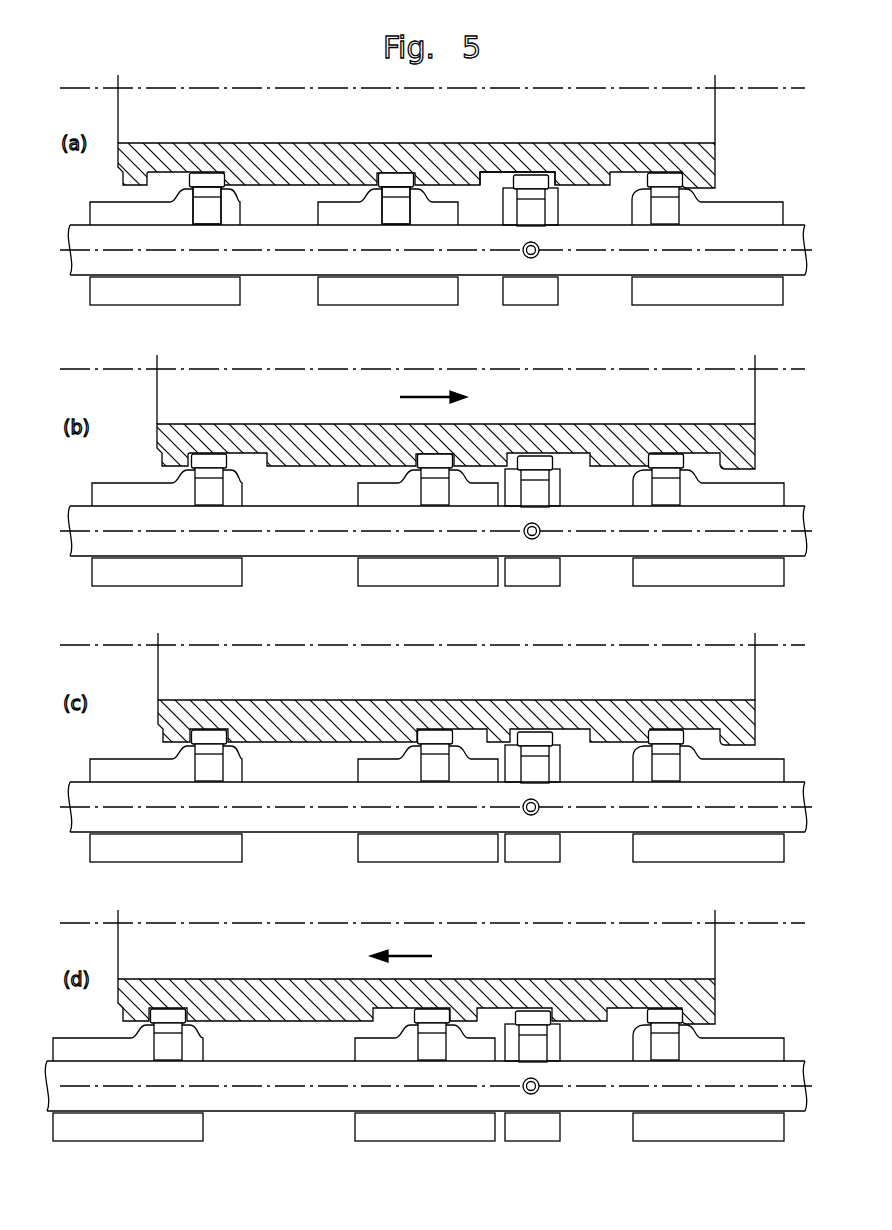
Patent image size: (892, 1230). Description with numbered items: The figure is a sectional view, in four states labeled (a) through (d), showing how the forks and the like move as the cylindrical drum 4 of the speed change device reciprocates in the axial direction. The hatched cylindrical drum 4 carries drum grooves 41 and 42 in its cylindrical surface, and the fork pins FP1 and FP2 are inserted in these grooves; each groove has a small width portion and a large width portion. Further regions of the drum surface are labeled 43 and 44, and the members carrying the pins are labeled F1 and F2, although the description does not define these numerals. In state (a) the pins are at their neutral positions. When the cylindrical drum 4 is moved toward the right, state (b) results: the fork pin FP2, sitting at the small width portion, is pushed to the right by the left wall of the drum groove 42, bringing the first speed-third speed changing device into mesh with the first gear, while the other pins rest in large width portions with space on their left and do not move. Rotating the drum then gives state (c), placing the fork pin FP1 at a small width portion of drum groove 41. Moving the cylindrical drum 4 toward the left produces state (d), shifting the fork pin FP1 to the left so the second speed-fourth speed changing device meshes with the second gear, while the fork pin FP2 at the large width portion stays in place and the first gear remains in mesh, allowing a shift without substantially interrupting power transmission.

The cylindrical drum 4 is at (715, 163).
The drum groove 41 is at (178, 175).
The drum groove 42 is at (393, 175).
The third engaging protrusion 43 is at (625, 173).
The recess 44 is at (497, 170).
The first fixing portion F1 is at (160, 212).
The second fixing portion F2 is at (442, 208).
The fork pin FP1 is at (208, 215).
The fork pin FP2 is at (405, 208).